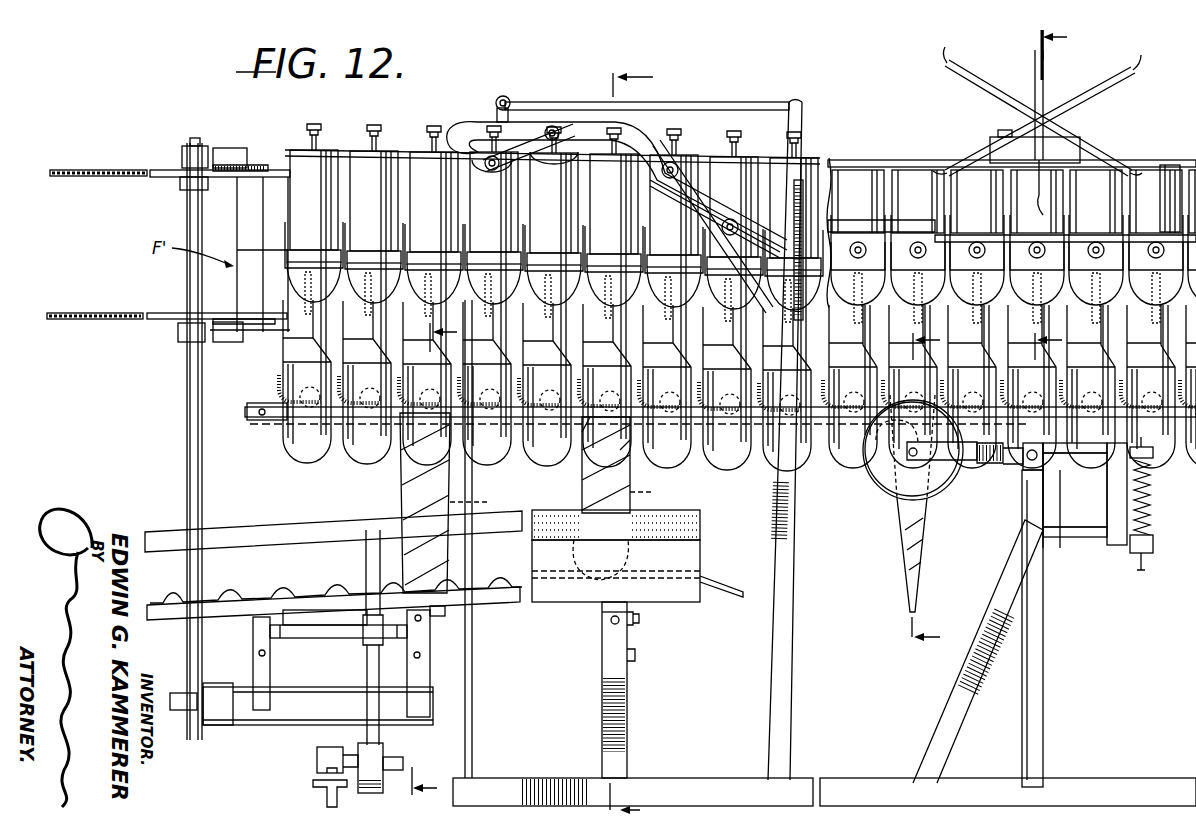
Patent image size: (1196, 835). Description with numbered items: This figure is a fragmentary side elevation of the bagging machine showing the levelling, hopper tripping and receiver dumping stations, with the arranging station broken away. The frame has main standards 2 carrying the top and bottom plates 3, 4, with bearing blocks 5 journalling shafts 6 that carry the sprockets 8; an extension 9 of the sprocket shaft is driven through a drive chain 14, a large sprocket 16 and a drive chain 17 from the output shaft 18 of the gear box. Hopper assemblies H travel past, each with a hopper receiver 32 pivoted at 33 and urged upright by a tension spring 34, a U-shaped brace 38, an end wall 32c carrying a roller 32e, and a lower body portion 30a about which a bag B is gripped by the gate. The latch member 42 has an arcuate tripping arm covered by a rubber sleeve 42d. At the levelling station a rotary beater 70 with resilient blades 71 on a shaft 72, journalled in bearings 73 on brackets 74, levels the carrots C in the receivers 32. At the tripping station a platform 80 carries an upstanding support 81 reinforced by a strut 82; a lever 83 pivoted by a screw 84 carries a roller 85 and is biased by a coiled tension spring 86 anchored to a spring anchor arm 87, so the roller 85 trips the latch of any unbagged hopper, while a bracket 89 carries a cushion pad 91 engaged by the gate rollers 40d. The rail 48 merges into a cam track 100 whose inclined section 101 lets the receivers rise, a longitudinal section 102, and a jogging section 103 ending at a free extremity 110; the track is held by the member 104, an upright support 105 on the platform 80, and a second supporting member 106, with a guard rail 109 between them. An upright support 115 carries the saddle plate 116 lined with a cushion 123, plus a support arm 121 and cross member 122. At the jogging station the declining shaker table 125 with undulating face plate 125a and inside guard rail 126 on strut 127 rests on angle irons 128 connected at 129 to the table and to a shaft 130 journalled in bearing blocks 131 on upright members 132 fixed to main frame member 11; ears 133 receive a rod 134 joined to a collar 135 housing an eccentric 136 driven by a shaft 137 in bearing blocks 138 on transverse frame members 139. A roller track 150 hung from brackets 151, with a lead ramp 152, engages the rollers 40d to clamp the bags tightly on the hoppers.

The main standards 2 is at (460, 697).
The top plate 3 is at (267, 168).
The bottom plate 4 is at (240, 345).
The bearing blocks 5 is at (182, 152).
The shafts 6 is at (196, 140).
The sprockets 8 is at (152, 170).
The extension of sprocket shaft 9 is at (180, 740).
The main frame member 11 is at (227, 710).
The drive chain 14 is at (1068, 195).
The large sprocket 16 is at (944, 495).
The drive chain 17 is at (648, 443).
The output shaft 18 is at (445, 568).
The downwardly extending portion 30a is at (504, 320).
The hopper receiver 32 is at (320, 163).
The end wall 32c is at (932, 301).
The roller 32e is at (428, 128).
The pivot 33 is at (352, 306).
The tension spring 34 is at (1137, 384).
The U-shaped member 38 is at (292, 237).
The rollers 40d is at (705, 362).
The latch arm 42 is at (786, 482).
The rubber sleeve 42d is at (530, 320).
The rail 48 is at (1170, 228).
The rotary beater 70 is at (1047, 110).
The arms or blades 71 is at (1130, 72).
The rotary shaft 72 is at (1035, 115).
The bearings 73 is at (1057, 120).
The brackets 74 is at (1078, 153).
The platform 80 is at (828, 787).
The support 81 is at (1037, 616).
The strut 82 is at (955, 723).
The lever 83 is at (1007, 465).
The screw 84 is at (1030, 460).
The roller 85 is at (887, 483).
The coiled tension spring 86 is at (1148, 505).
The spring anchor arm 87 is at (1143, 554).
The bracket 89 is at (902, 383).
The resilient cushion pad 91 is at (932, 319).
The cam rail 100 is at (658, 136).
The cam track section 101 is at (740, 216).
The cam track section 102 is at (585, 128).
The jogging cam track section 103 is at (535, 128).
The supporting member 104 is at (803, 113).
The upright support 105 is at (788, 627).
The second supporting member 106 is at (500, 96).
The guard rail 109 is at (743, 108).
The free extremity 110 is at (455, 136).
The upright support 115 is at (627, 697).
The inclined plate 116 is at (694, 564).
The support arm 121 is at (634, 652).
The cross member 122 is at (638, 617).
The cushion 123 is at (700, 528).
The shaker table 125 is at (522, 617).
The undulating face plate 125a is at (235, 592).
The inside guard rail 126 is at (238, 528).
The strut 127 is at (360, 554).
The angle irons 128 is at (278, 640).
The connection 129 is at (287, 621).
The shaft 130 is at (318, 696).
The bearing blocks 131 is at (253, 637).
The upright members 132 is at (360, 668).
The ears 133 is at (336, 578).
The rod 134 is at (370, 672).
The collar 135 is at (387, 760).
The eccentric 136 is at (337, 797).
The shaft 137 is at (403, 754).
The bearing blocks 138 is at (330, 757).
The transverse frame members 139 is at (357, 778).
The roller track 150 is at (302, 462).
The supporting brackets 151 is at (258, 398).
The ramp 152 is at (728, 453).
The bag B is at (400, 478).
The carrots C is at (558, 497).
The hopper assembly H is at (552, 308).